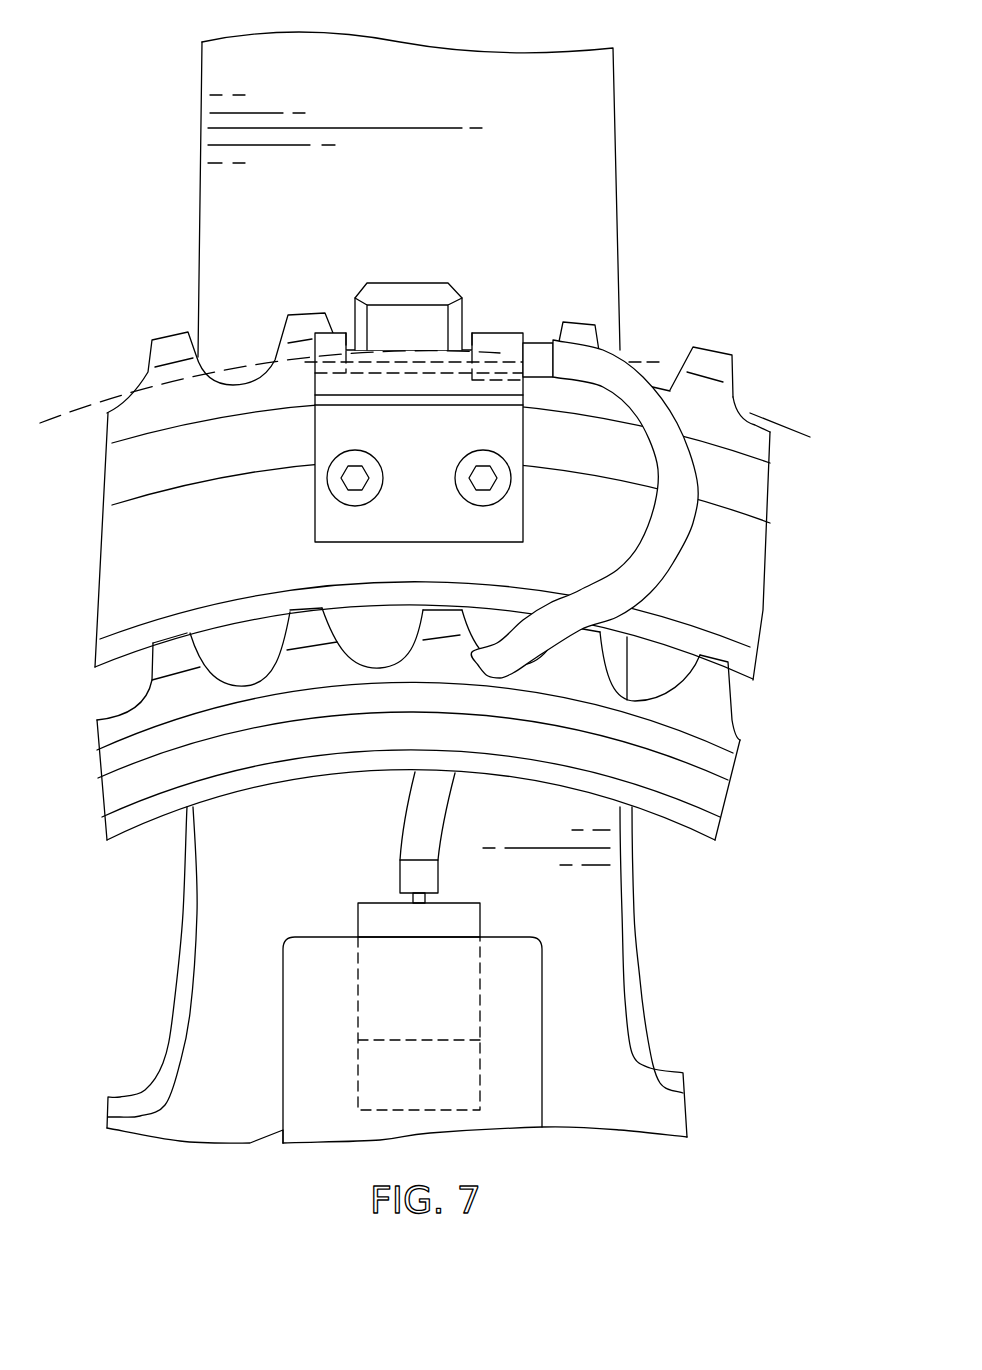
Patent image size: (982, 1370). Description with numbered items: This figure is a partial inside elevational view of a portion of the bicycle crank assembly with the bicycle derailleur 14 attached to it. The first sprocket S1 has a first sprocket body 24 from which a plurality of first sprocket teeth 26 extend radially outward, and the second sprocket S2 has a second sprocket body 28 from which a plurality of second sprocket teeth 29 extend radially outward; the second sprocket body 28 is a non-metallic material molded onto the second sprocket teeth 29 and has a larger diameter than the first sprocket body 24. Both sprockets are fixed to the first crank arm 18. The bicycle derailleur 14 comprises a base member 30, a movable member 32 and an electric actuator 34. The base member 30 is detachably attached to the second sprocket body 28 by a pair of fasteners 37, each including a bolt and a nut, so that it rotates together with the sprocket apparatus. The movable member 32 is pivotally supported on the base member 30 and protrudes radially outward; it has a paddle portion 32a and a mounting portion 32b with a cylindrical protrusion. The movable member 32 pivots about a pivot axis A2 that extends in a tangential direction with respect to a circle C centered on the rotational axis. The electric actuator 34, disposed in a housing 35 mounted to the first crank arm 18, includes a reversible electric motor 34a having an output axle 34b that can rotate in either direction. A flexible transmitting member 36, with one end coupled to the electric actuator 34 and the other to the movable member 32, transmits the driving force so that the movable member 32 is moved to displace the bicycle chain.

The bicycle derailleur 14 is at (320, 272).
The first crank arm 18 is at (629, 160).
The first sprocket body 24 is at (700, 793).
The first sprocket teeth 26 is at (710, 675).
The second sprocket body 28 is at (733, 543).
The second sprocket teeth 29 is at (715, 348).
The base member 30 is at (303, 516).
The movable member 32 is at (462, 301).
The paddle portion 32a is at (397, 322).
The mounting portion 32b is at (536, 342).
The electric actuator 34 is at (495, 1072).
The electric motor 34a is at (480, 920).
The output axle 34b is at (400, 876).
The housing 35 is at (271, 1022).
The transmitting member 36 is at (670, 567).
The fasteners 37 is at (465, 508).
The pivot axis A2 is at (652, 362).
The circle C is at (62, 415).
The first sprocket S1 is at (737, 716).
The second sprocket S2 is at (737, 400).